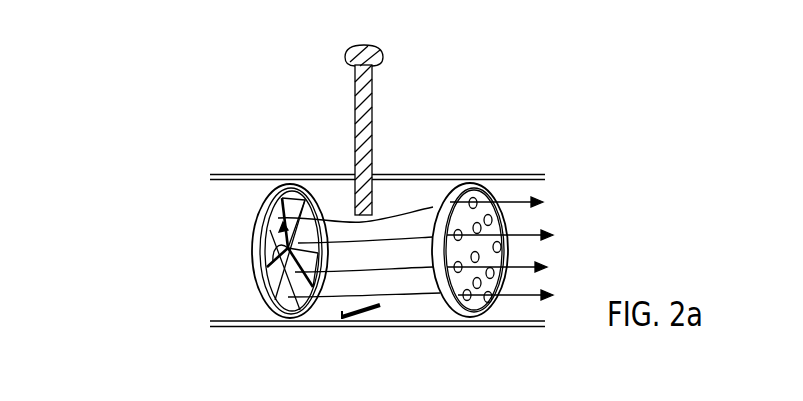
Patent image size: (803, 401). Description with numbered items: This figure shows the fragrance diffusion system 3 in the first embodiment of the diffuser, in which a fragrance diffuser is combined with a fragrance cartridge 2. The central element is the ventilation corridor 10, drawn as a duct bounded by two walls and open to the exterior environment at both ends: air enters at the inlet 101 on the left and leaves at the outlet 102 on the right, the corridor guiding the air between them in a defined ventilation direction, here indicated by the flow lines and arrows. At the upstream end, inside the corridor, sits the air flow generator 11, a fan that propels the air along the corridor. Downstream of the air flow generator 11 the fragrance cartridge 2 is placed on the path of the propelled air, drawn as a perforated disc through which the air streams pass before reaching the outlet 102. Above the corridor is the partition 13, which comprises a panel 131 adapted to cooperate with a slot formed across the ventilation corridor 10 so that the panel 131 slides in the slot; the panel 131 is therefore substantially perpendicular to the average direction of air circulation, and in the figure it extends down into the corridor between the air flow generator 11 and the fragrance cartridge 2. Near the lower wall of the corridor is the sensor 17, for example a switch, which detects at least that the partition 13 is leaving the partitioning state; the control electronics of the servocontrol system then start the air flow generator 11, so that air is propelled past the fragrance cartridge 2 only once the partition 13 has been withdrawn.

The fragrance diffusion system 3 is at (599, 72).
The ventilation corridor 10 is at (232, 162).
The inlet 101 is at (197, 227).
The outlet 102 is at (554, 203).
The air flow generator 11 is at (282, 172).
The partition 13 is at (373, 38).
The panel 131 is at (376, 117).
The fragrance cartridge 2 is at (480, 172).
The sensor 17 is at (378, 320).